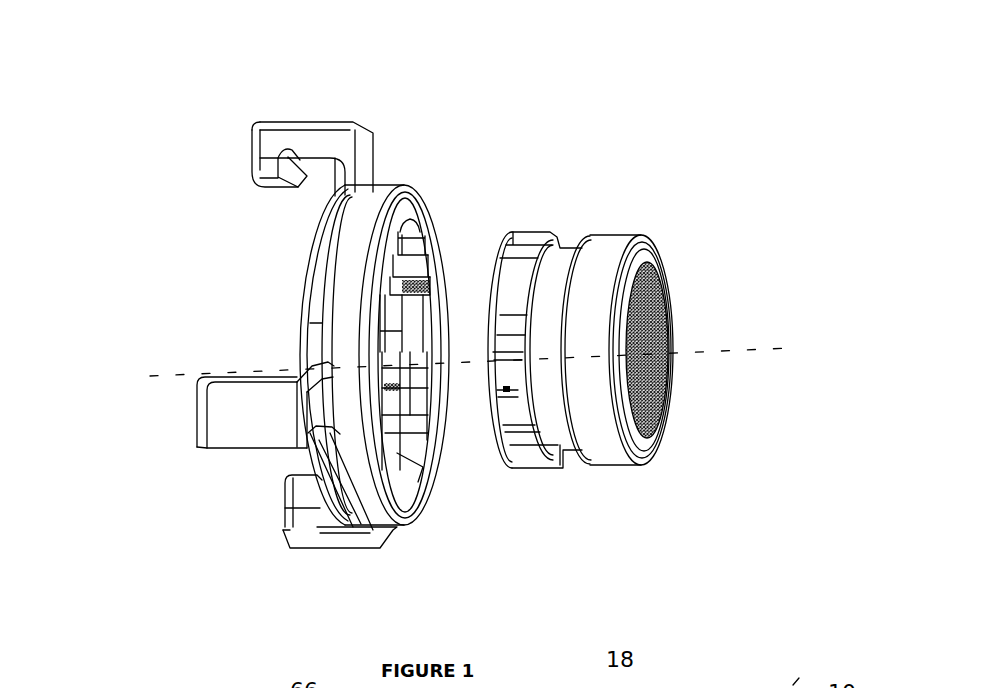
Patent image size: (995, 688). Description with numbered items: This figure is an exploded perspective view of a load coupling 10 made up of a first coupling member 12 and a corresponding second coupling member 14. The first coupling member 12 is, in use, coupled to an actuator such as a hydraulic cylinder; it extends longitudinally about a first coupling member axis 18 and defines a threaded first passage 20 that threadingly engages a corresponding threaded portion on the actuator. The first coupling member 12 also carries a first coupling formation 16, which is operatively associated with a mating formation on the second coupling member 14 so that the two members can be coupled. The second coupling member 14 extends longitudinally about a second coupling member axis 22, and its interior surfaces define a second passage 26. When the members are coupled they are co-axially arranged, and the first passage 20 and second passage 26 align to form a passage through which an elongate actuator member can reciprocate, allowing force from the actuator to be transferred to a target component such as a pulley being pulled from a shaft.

The load coupling 10 is at (624, 88).
The first coupling member 12 is at (688, 208).
The second coupling member 14 is at (207, 225).
The first coupling formation 16 is at (210, 467).
The first coupling member axis 18 is at (784, 350).
The threaded first passage 20 is at (692, 299).
The second coupling member axis 22 is at (128, 373).
The second passage 26 is at (440, 276).